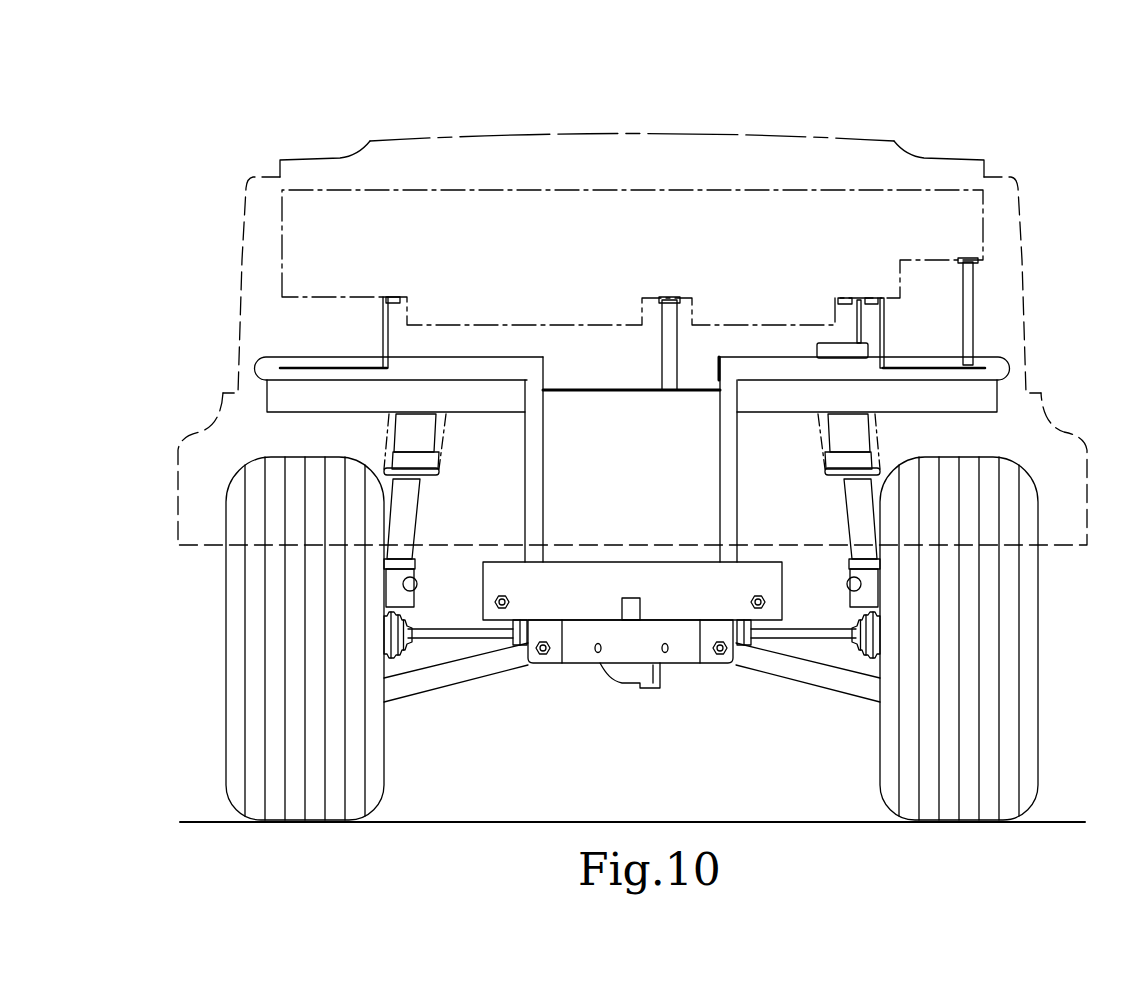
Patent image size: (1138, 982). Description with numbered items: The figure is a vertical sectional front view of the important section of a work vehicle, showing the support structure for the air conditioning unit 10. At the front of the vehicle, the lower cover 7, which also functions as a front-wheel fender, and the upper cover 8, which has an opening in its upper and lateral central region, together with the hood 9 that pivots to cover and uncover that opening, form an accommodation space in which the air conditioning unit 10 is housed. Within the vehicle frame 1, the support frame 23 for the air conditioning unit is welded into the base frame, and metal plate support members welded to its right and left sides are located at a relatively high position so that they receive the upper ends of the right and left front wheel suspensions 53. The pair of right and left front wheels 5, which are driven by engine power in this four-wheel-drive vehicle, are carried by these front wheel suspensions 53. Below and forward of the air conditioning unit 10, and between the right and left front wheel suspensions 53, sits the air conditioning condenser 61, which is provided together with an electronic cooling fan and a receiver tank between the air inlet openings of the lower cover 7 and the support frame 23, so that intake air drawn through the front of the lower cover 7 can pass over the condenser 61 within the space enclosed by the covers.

The vehicle frame 1 is at (570, 660).
The front wheels 5 is at (232, 665).
The lower cover 7 is at (177, 490).
The upper cover 8 is at (1033, 262).
The hood 9 is at (764, 134).
The air conditioning unit 10 is at (484, 186).
The support frame 23 is at (258, 362).
The front wheel suspensions 53 is at (436, 471).
The air conditioning condenser 61 is at (652, 527).